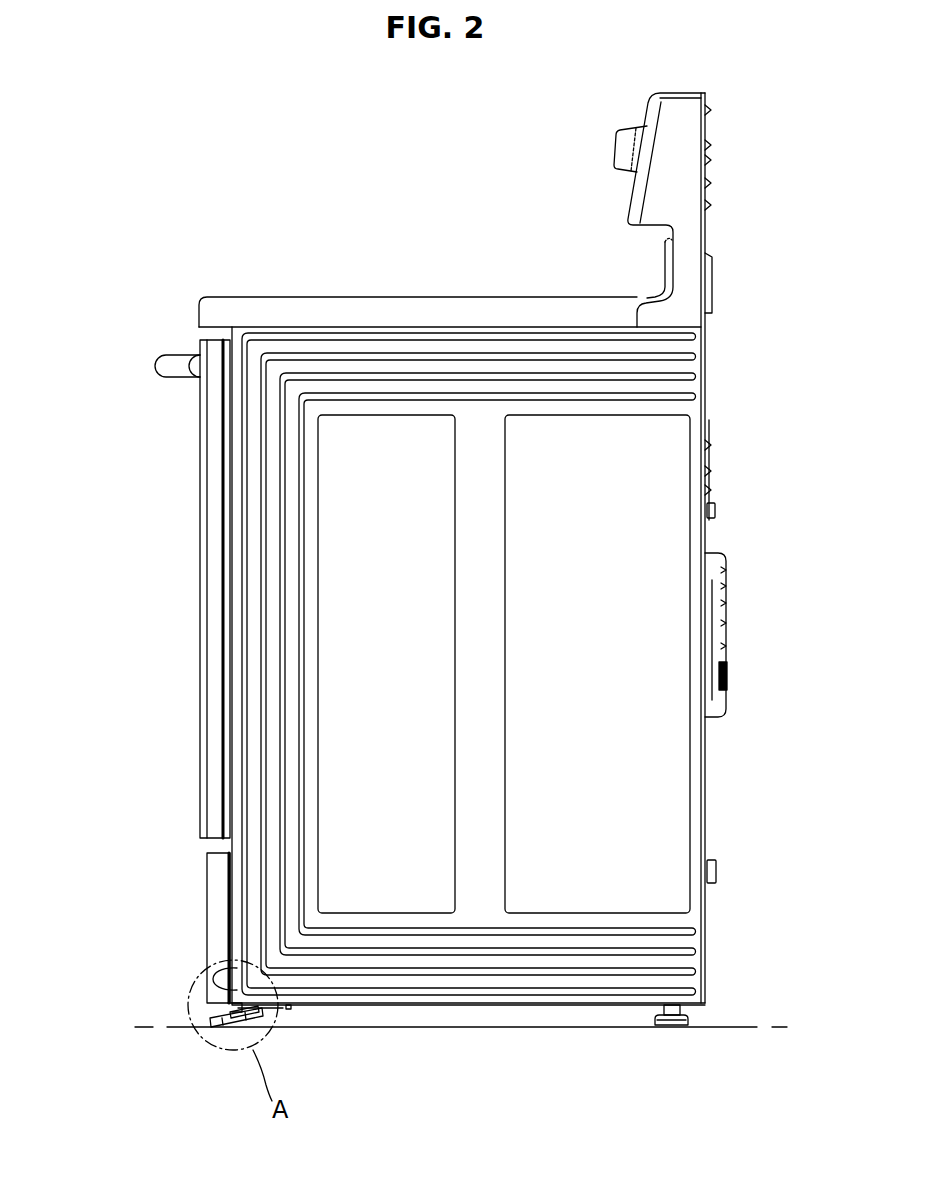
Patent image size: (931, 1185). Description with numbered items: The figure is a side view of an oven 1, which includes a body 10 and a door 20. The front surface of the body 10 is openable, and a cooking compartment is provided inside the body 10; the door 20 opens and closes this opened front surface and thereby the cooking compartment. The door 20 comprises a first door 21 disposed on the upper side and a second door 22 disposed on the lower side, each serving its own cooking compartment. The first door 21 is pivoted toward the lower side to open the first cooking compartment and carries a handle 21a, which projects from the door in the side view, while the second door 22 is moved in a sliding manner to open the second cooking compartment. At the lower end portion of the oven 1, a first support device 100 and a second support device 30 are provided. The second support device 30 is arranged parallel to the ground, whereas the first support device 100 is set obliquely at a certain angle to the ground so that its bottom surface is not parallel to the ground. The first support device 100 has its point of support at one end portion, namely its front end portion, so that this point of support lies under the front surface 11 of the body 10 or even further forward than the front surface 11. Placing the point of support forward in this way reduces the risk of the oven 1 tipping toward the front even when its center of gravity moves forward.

The oven 1 is at (238, 200).
The body 10 is at (712, 899).
The front surface 11 is at (208, 1002).
The door 20 is at (132, 920).
The first door 21 is at (213, 690).
The handle 21a is at (157, 365).
The second door 22 is at (212, 880).
The second support device 30 is at (702, 1019).
The first support device 100 is at (200, 1008).